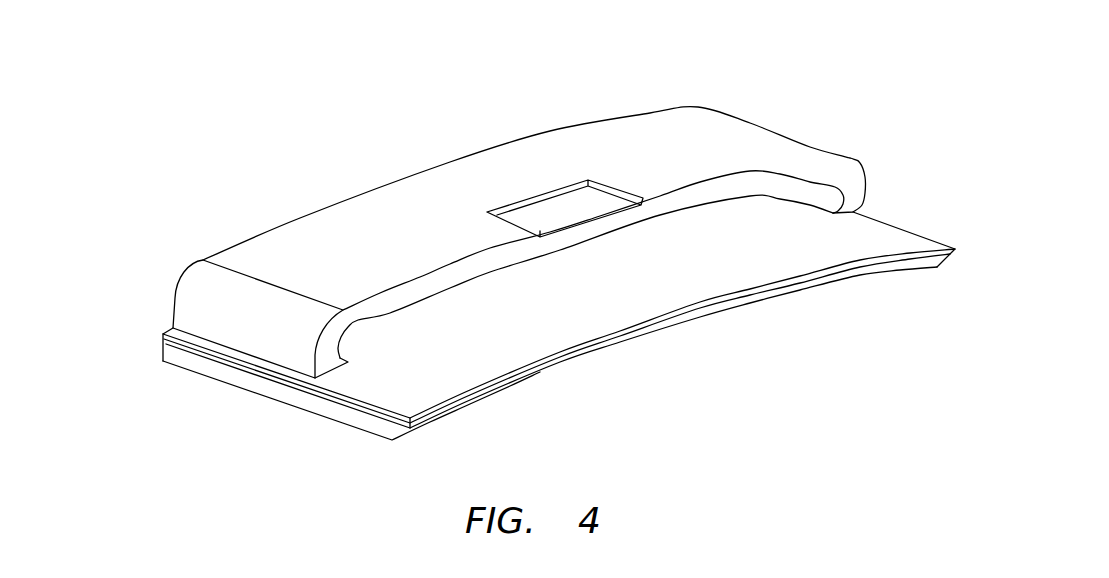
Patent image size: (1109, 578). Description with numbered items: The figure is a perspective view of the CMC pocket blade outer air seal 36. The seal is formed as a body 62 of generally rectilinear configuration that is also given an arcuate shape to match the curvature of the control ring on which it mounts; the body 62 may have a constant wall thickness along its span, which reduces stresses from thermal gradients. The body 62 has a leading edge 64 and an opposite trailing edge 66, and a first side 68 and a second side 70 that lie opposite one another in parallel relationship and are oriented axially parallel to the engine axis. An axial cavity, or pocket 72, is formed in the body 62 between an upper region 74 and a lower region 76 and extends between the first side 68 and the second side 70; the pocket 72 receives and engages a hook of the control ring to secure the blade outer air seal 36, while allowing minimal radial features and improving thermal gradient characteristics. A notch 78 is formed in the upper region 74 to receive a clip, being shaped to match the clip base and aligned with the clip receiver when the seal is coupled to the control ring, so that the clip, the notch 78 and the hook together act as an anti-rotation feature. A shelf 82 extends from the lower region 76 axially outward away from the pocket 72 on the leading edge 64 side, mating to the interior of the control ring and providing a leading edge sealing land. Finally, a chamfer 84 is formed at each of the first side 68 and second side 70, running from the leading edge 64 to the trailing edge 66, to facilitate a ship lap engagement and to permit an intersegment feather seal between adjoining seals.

The blade outer air seal 36 is at (503, 141).
The body 62 is at (760, 114).
The leading edge 64 is at (670, 325).
The trailing edge 66 is at (160, 328).
The first side 68 is at (278, 402).
The second side 70 is at (892, 223).
The pocket 72 is at (730, 222).
The upper region 74 is at (372, 238).
The lower region 76 is at (636, 268).
The notch 78 is at (566, 177).
The shelf 82 is at (485, 343).
The chamfer 84 is at (203, 347).